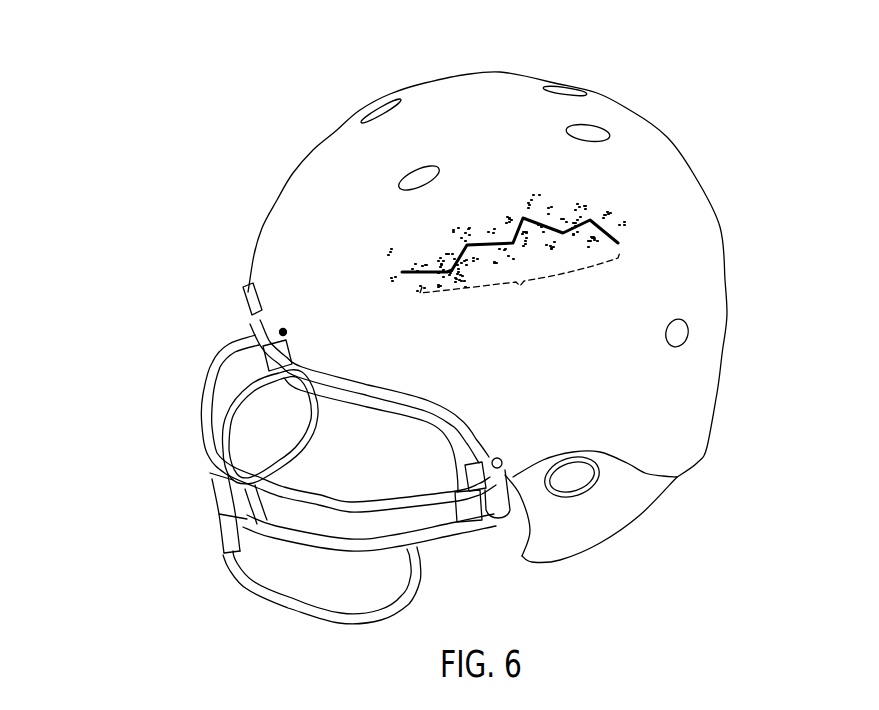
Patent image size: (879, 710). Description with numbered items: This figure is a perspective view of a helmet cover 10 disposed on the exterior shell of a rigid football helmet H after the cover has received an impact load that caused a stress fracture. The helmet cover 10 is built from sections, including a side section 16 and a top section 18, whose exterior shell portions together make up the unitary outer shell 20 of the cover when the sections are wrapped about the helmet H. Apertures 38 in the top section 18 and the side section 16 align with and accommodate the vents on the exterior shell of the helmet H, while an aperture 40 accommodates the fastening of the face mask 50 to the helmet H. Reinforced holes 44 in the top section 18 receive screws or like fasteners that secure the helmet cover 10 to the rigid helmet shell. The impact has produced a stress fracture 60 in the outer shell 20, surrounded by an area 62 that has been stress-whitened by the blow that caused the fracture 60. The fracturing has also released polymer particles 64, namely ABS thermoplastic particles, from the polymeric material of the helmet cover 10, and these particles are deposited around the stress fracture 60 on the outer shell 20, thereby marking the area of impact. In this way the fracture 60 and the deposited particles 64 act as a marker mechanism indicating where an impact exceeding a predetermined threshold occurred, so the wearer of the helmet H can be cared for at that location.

The helmet cover 10 is at (700, 98).
The side section 16 is at (596, 347).
The top section 18 is at (492, 118).
The outer shell 20 is at (718, 195).
The apertures 38 is at (412, 172).
The apertures 40 is at (503, 472).
The reinforced holes 44 is at (250, 332).
The face mask 50 is at (198, 523).
The stress fracture 60 is at (620, 237).
The area 62 is at (520, 285).
The polymer particles 64 is at (570, 208).
The helmet H is at (122, 442).